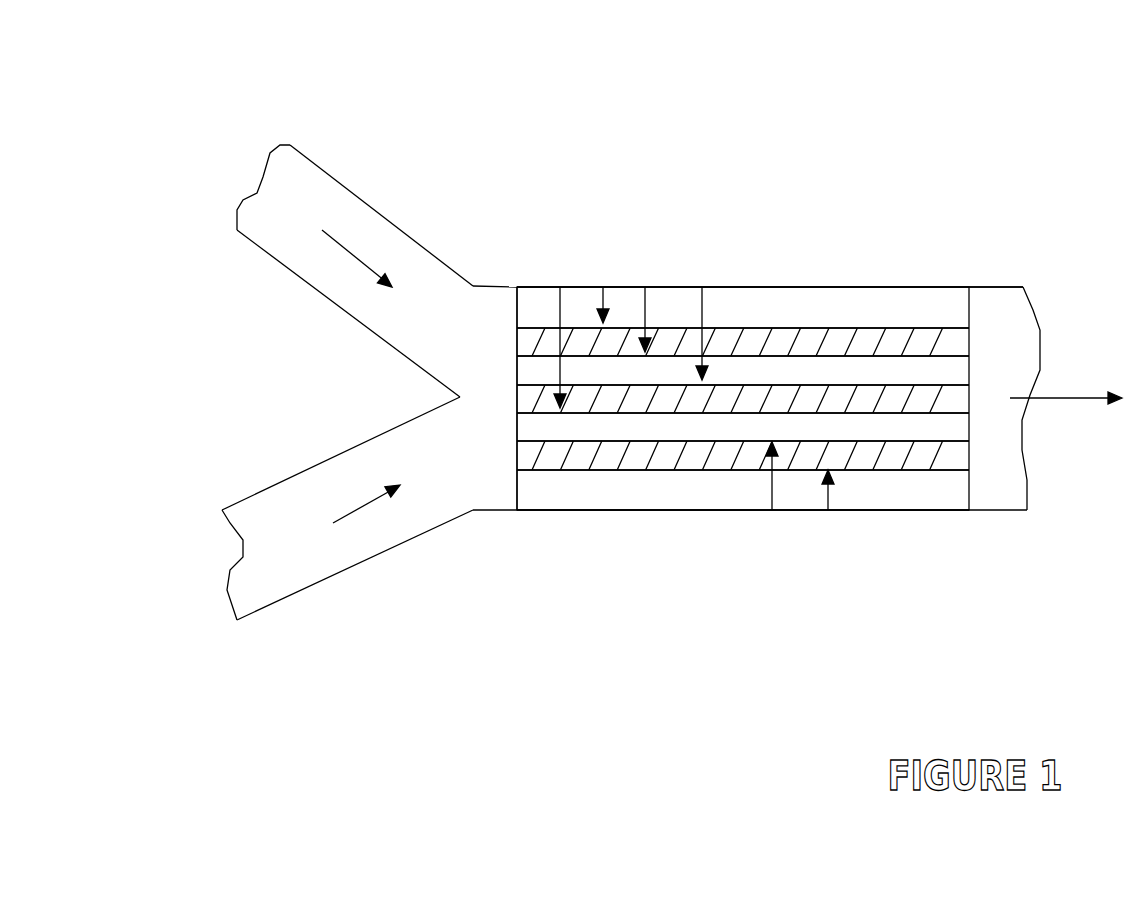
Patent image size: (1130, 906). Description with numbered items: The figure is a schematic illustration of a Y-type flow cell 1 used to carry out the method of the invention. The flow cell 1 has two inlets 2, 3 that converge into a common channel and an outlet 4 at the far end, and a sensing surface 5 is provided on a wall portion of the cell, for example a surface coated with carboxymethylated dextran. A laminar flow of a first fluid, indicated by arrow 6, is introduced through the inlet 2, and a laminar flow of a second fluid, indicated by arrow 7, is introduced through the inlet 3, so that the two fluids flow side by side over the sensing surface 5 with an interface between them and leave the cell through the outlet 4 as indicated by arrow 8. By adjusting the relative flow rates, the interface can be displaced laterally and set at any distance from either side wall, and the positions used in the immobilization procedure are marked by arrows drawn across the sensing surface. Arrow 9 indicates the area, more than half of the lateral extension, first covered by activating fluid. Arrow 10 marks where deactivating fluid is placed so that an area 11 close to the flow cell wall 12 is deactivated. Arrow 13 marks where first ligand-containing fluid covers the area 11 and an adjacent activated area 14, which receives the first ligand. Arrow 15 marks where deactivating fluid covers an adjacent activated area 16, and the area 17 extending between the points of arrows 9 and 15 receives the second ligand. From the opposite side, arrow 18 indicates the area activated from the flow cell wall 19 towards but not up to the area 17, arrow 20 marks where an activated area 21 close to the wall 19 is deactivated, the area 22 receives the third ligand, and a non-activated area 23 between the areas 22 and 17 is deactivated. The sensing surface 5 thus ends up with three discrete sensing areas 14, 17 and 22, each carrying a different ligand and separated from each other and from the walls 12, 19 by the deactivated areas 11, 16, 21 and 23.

The Y-type flow cell 1 is at (772, 312).
The inlet 2 is at (376, 228).
The inlet 3 is at (369, 547).
The outlet 4 is at (1058, 398).
The sensing surface 5 is at (465, 451).
The arrow 6 is at (372, 227).
The arrow 7 is at (366, 550).
The arrow 8 is at (1070, 452).
The arrow 9 is at (551, 300).
The arrow 10 is at (632, 258).
The area 11 is at (743, 287).
The flow cell wall 12 is at (770, 254).
The arrow 13 is at (679, 286).
The area 14 is at (743, 288).
The arrow 15 is at (732, 313).
The area 16 is at (762, 303).
The area 17 is at (743, 475).
The arrow 18 is at (753, 504).
The flow cell wall 19 is at (743, 551).
The arrow 20 is at (816, 531).
The area 21 is at (743, 545).
The area 22 is at (743, 503).
The area 23 is at (743, 516).